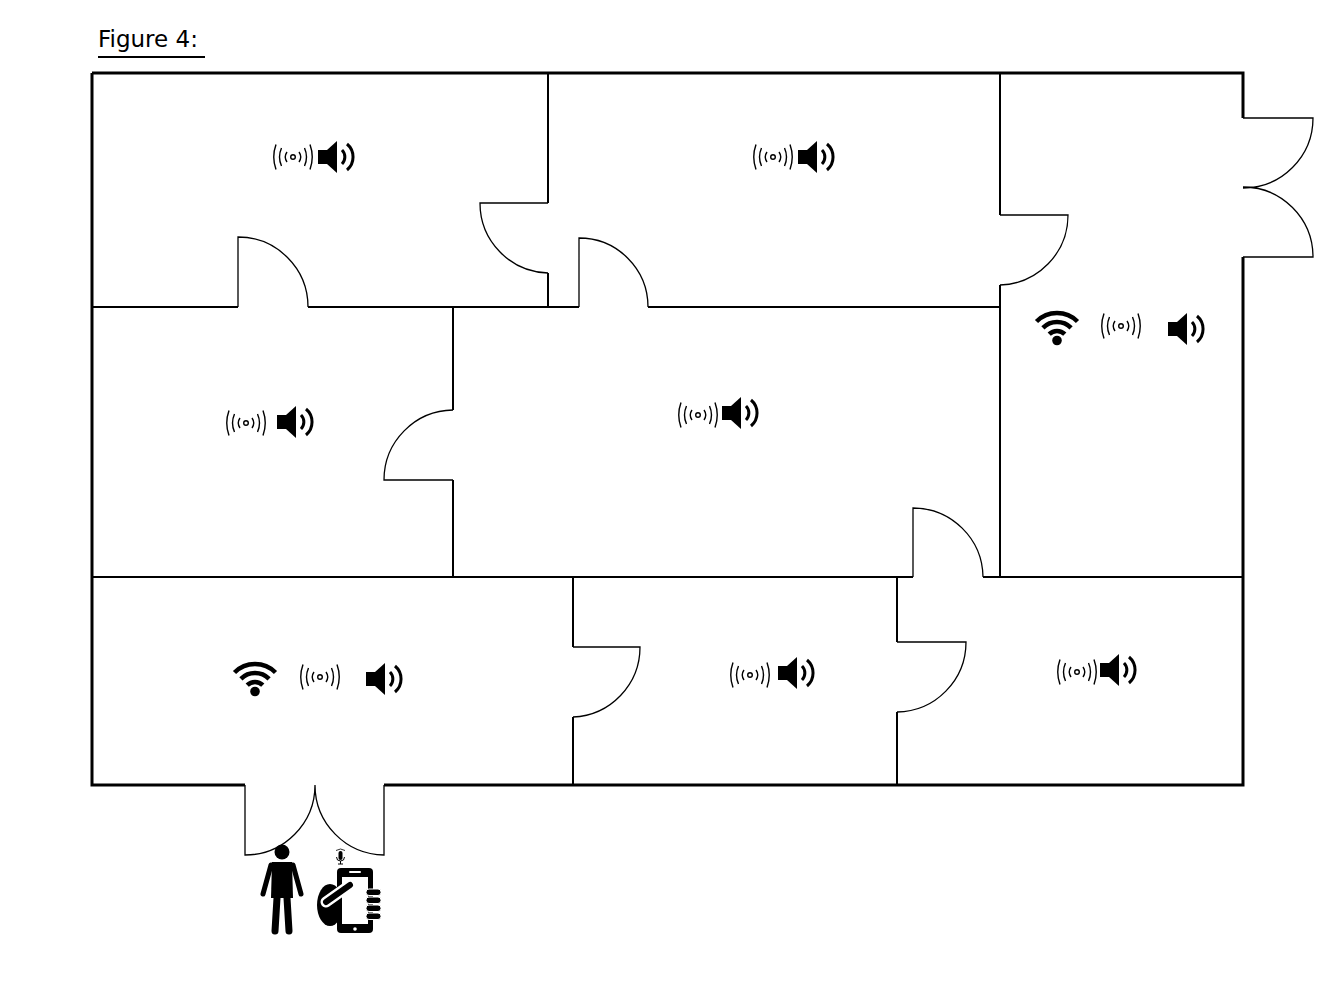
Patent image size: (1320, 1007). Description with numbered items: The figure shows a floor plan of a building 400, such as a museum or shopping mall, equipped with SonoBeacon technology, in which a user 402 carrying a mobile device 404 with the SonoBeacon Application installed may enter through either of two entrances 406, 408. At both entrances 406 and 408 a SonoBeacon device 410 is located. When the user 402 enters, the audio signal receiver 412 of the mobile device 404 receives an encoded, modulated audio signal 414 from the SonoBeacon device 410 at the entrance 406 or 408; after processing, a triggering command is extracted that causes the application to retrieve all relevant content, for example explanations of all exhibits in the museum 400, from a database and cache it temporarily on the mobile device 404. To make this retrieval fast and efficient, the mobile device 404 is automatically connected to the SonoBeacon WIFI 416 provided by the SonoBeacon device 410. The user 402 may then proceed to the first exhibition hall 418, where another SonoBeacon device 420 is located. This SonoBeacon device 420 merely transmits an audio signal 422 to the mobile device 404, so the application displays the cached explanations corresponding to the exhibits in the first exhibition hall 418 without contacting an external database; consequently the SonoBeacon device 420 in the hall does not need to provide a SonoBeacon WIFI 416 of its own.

The building 400 is at (667, 447).
The user 402 is at (282, 899).
The mobile device 404 is at (349, 910).
The entrance 406 is at (334, 820).
The entrance 408 is at (1278, 177).
The SonoBeacon device 410 is at (721, 516).
The audio signal receiver 412 is at (331, 856).
The audio signal 414 is at (784, 515).
The SonoBeacon WIFI 416 is at (656, 515).
The first exhibition hall 418 is at (607, 711).
The SonoBeacon device 420 is at (662, 429).
The audio signal 422 is at (706, 427).